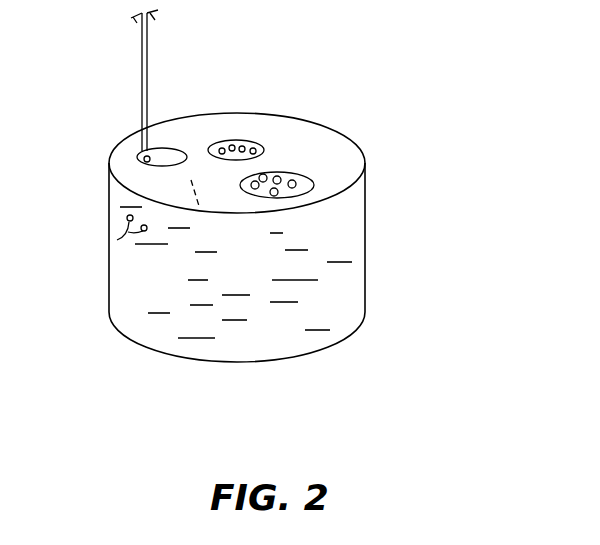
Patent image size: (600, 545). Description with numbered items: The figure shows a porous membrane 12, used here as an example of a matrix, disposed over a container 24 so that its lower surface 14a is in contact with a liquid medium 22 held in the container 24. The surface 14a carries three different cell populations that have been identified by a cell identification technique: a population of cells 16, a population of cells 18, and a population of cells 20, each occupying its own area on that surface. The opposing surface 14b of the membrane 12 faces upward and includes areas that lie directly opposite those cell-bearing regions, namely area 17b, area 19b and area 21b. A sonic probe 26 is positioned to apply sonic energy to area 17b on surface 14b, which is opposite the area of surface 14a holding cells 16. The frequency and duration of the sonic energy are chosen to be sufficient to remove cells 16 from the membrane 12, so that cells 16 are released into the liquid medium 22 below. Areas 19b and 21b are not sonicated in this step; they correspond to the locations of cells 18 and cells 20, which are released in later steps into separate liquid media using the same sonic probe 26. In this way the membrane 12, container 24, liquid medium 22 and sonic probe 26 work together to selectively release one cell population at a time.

The membrane 12 is at (272, 223).
The surface 14a is at (200, 215).
The opposing surface 14b is at (290, 140).
The population of cells 16 is at (150, 166).
The area 17b is at (145, 155).
The population of cells 18 is at (217, 157).
The area 19b is at (223, 137).
The population of cells 20 is at (260, 183).
The area 21b is at (303, 187).
The liquid medium 22 is at (278, 303).
The container 24 is at (365, 287).
The sonic probe 26 is at (142, 52).